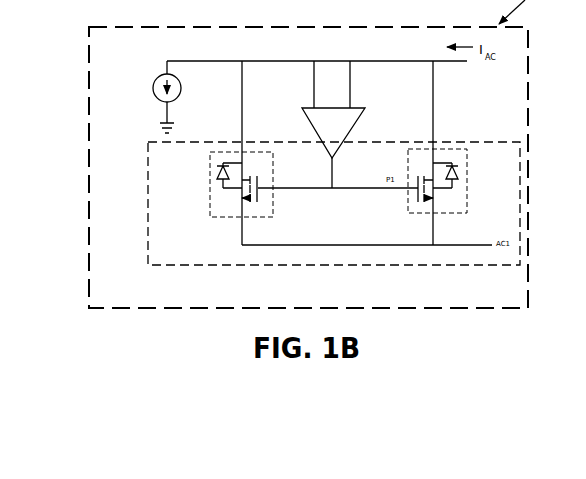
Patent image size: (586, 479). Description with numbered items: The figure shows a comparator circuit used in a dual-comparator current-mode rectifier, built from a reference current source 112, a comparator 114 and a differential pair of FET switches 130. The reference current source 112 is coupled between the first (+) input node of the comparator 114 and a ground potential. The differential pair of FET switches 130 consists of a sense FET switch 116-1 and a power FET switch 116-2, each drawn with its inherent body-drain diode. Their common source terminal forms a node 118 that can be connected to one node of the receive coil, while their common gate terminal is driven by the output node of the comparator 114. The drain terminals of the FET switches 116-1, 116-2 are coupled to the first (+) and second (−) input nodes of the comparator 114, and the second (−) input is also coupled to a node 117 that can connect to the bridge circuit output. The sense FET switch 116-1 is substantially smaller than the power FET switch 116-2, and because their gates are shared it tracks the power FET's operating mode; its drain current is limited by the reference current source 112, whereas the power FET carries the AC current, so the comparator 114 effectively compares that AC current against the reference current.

The reference current source 112 is at (155, 76).
The comparator 114 is at (359, 107).
The sense FET switch 116-1 is at (208, 194).
The power FET switch 116-2 is at (495, 168).
The node 117 is at (329, 153).
The node 118 is at (367, 258).
The differential pair of FET switches 130 is at (147, 217).